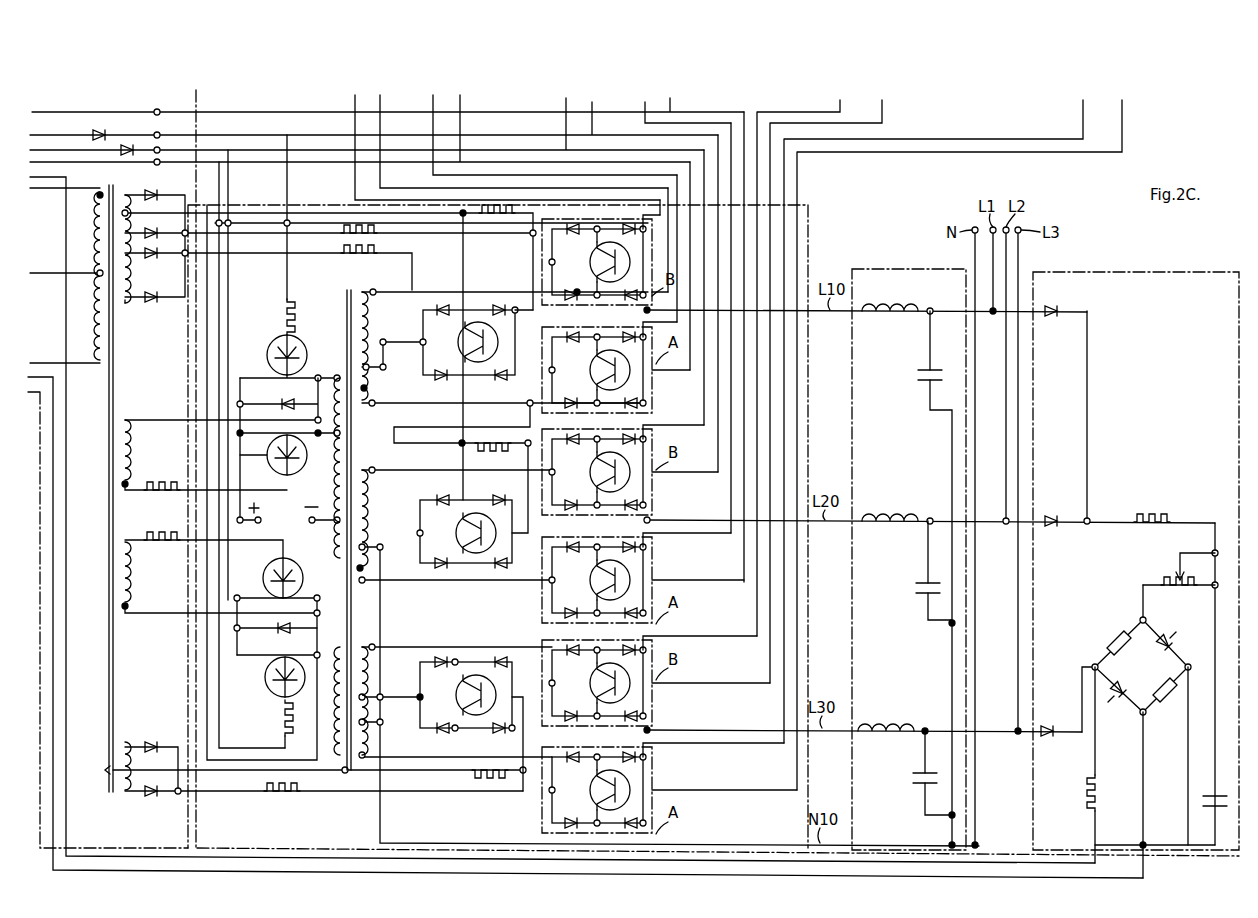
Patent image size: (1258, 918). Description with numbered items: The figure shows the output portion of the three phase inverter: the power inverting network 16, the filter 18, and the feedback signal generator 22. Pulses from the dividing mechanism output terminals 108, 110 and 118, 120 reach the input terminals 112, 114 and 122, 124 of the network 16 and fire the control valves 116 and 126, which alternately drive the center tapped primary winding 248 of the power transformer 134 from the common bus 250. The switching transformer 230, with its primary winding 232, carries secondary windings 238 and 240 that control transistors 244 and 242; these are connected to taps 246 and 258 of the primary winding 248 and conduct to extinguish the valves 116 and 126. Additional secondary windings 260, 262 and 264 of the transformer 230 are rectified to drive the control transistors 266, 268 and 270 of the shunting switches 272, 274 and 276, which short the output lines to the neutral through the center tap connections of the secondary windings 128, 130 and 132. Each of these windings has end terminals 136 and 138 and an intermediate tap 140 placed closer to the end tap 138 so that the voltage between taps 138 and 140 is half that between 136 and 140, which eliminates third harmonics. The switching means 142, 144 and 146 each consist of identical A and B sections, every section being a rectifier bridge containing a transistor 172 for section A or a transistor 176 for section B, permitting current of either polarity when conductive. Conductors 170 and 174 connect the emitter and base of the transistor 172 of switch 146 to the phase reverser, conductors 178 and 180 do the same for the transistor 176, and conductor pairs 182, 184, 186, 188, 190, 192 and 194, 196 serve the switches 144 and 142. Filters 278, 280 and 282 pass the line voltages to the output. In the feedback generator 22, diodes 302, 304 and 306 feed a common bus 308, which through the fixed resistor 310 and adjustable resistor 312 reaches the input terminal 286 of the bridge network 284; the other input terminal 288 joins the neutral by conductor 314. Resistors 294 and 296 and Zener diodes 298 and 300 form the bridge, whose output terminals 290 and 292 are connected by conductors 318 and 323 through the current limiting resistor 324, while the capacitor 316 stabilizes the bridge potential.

The power inverting network 16 is at (838, 194).
The filter 18 is at (893, 269).
The feedback signal generator 22 is at (1160, 272).
The dividing mechanism output terminal 108 is at (157, 112).
The dividing mechanism output terminal 110 is at (157, 135).
The input terminal 112 is at (310, 223).
The input terminal 114 is at (287, 223).
The control valve 116 is at (275, 350).
The output terminal 118 is at (157, 150).
The output terminal 120 is at (157, 162).
The input terminal 122 is at (228, 223).
The input terminal 124 is at (219, 223).
The control valve 126 is at (268, 698).
The secondary winding 128 is at (382, 326).
The secondary winding 130 is at (368, 505).
The secondary winding 132 is at (370, 675).
The transformer 134 is at (340, 318).
The end terminal 136 is at (385, 455).
The end terminal 138 is at (372, 403).
The intermediate tap 140 is at (337, 378).
The switching means 142 is at (652, 410).
The switching means 144 is at (652, 580).
The switching means 146 is at (652, 722).
The conductor 170 is at (1083, 130).
The transistor 172 is at (588, 382).
The conductor 174 is at (1122, 132).
The transistor 176 is at (588, 274).
The conductor 178 is at (840, 106).
The conductor 180 is at (882, 116).
The conductor 182 is at (670, 106).
The conductor 184 is at (645, 112).
The conductor 186 is at (592, 132).
The conductor 188 is at (566, 135).
The conductor 190 is at (460, 150).
The conductor 192 is at (433, 145).
The conductor 194 is at (380, 108).
The conductor 196 is at (355, 108).
The switching transformer 230 is at (113, 380).
The primary winding 232 is at (100, 226).
The secondary winding 238 is at (128, 455).
The secondary winding 240 is at (128, 575).
The transistor 242 is at (262, 570).
The transistor 244 is at (297, 486).
The tap 246 is at (295, 400).
The primary winding 248 is at (330, 482).
The common bus 250 is at (268, 470).
The tap 258 is at (293, 630).
The secondary winding 260 is at (125, 192).
The secondary winding 262 is at (115, 302).
The secondary winding 264 is at (138, 733).
The control transistor 266 is at (462, 332).
The control transistor 268 is at (458, 540).
The control transistor 270 is at (458, 692).
The shunting switch 272 is at (492, 400).
The shunting switch 274 is at (477, 490).
The shunting switch 276 is at (500, 753).
The filter 278 is at (895, 318).
The filter 280 is at (890, 528).
The filter 282 is at (888, 738).
The bridge network 284 is at (1157, 674).
The input terminal 286 is at (1143, 620).
The input terminal 288 is at (1143, 712).
The output terminal 290 is at (1172, 645).
The output terminal 292 is at (1095, 667).
The resistor 294 is at (1112, 640).
The resistor 296 is at (1165, 700).
The Zener diode 298 is at (1160, 635).
The Zener diode 300 is at (1119, 702).
The diode 302 is at (1058, 304).
The diode 304 is at (1062, 508).
The diode 306 is at (1050, 738).
The common bus 308 is at (1087, 447).
The fixed resistor 310 is at (1158, 510).
The adjustable resistor 312 is at (1175, 568).
The conductor 314 is at (1143, 765).
The capacitor 316 is at (1200, 800).
The conductor 318 is at (53, 680).
The conductor 323 is at (66, 620).
The current limiting resistor 324 is at (1090, 797).